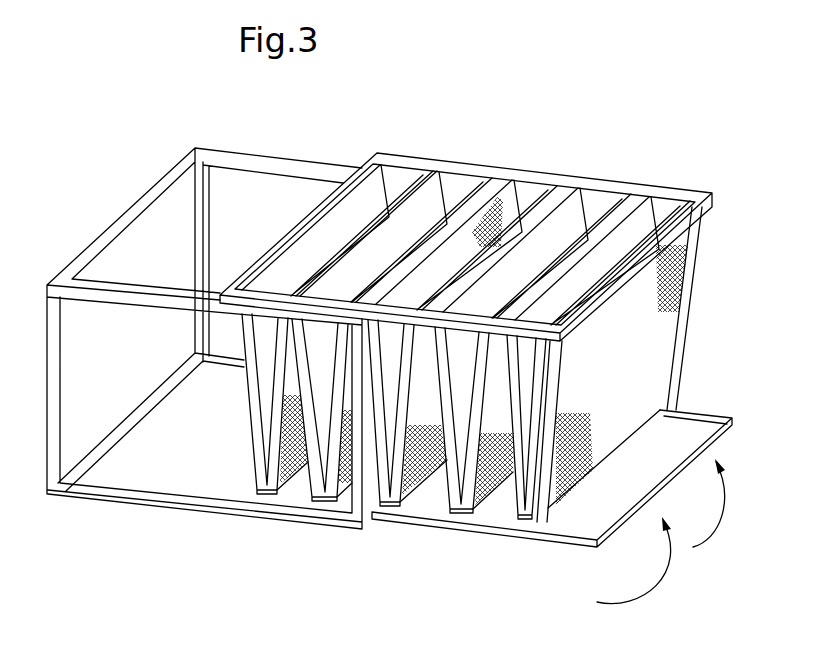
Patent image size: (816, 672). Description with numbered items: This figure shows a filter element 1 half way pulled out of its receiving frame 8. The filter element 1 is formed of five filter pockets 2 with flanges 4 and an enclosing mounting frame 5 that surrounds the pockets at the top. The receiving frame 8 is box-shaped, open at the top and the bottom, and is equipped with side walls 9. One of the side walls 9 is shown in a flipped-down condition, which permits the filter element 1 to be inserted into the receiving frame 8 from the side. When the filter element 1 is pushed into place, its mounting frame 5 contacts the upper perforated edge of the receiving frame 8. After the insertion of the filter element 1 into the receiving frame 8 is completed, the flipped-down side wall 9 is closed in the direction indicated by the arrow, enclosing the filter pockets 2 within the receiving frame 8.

The filter element 1 is at (476, 338).
The filter pockets 2 is at (532, 527).
The flanges 4 is at (417, 175).
The mounting frame 5 is at (537, 173).
The receiving frame 8 is at (134, 497).
The side walls 9 is at (429, 527).